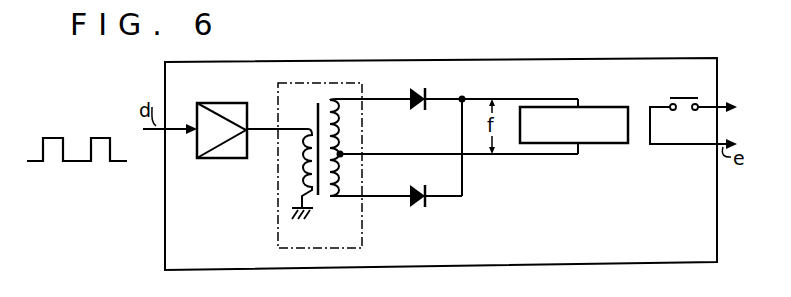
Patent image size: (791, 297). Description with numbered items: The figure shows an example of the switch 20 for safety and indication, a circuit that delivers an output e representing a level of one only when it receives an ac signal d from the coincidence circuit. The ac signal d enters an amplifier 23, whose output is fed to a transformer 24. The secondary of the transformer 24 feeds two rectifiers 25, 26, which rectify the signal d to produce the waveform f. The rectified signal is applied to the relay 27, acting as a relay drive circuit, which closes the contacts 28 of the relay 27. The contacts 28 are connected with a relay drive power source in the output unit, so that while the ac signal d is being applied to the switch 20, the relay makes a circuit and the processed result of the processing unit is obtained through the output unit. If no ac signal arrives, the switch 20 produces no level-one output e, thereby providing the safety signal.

The switch for safety and indication 20 is at (706, 56).
The amplifier 23 is at (206, 102).
The transformer 24 is at (276, 113).
The rectifier 25 is at (410, 92).
The rectifier 26 is at (411, 205).
The relay 27 is at (617, 105).
The contacts of the relay 28 is at (691, 95).